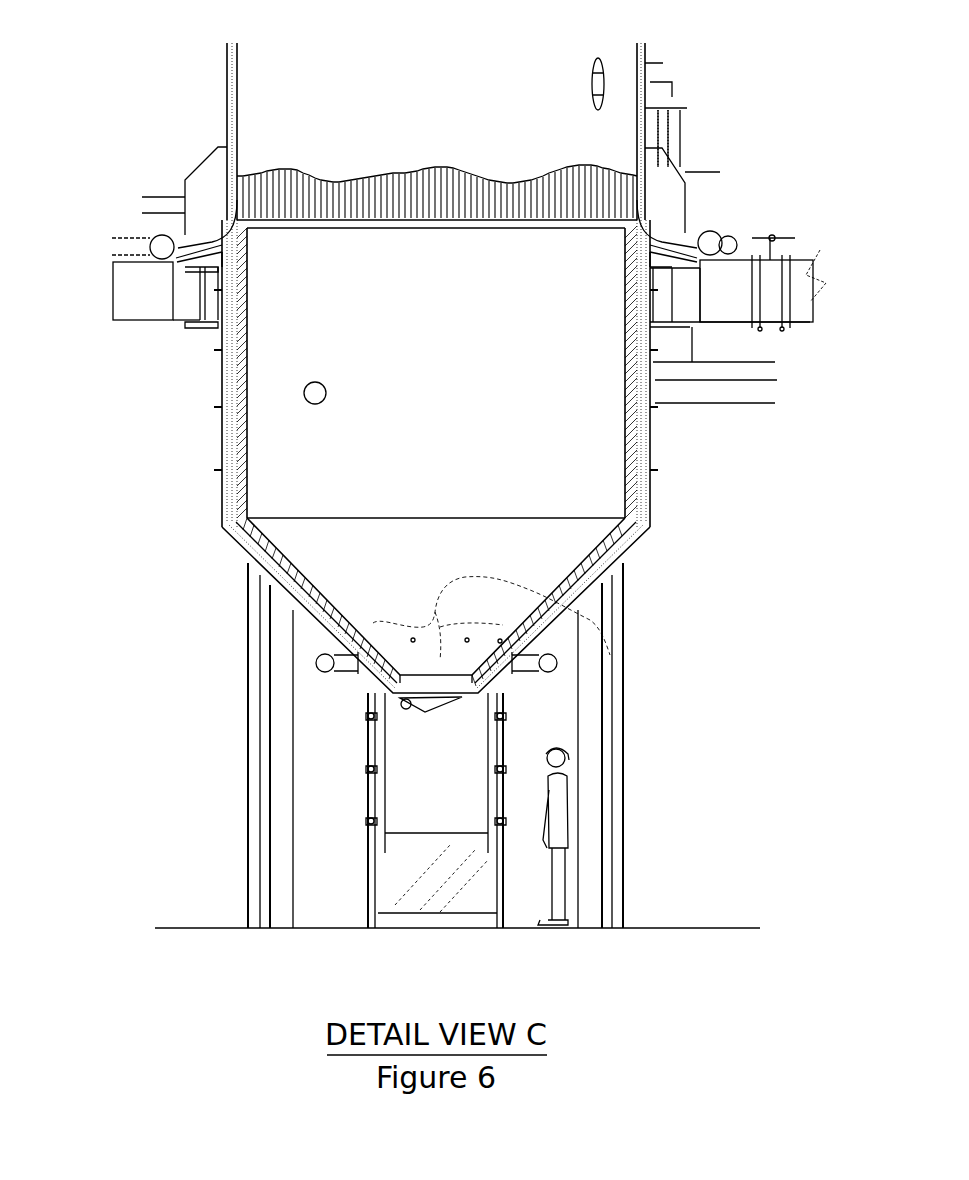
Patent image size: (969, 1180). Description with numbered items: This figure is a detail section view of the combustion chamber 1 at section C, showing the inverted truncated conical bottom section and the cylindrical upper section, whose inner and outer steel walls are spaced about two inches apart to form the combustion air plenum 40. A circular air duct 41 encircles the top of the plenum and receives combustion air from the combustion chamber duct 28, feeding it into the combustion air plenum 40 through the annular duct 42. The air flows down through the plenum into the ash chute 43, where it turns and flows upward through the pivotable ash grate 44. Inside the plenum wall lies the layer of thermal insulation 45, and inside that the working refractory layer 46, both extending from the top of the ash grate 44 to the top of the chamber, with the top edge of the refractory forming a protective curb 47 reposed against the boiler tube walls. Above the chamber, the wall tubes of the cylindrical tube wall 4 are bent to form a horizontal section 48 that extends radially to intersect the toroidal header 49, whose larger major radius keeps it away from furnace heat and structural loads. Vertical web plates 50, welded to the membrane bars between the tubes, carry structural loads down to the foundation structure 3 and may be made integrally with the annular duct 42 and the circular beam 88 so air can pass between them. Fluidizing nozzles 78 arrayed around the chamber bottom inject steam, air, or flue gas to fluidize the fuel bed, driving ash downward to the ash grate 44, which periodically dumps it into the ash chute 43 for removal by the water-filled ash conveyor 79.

The combustion chamber 1 is at (612, 550).
The foundation structure 3 is at (248, 865).
The cylindrical tube wall 4 is at (236, 74).
The combustion chamber duct 28 is at (818, 250).
The combustion air plenum 40 is at (222, 408).
The circular air duct 41 is at (150, 270).
The annular duct 42 is at (152, 240).
The ash chute 43 is at (412, 768).
The pivotable ash grate 44 is at (318, 662).
The thermal insulation layer 45 is at (222, 527).
The working refractory layer 46 is at (222, 337).
The protective curb 47 is at (235, 217).
The horizontal section 48 is at (678, 233).
The toroidal header 49 is at (730, 235).
The vertical web plates 50 is at (657, 152).
The fluidizing nozzles 78 is at (578, 604).
The ash conveyor 79 is at (375, 928).
The circular beam 88 is at (673, 303).